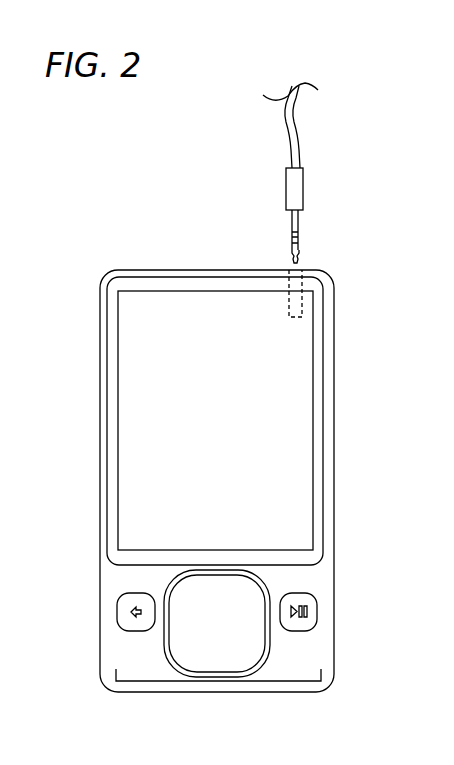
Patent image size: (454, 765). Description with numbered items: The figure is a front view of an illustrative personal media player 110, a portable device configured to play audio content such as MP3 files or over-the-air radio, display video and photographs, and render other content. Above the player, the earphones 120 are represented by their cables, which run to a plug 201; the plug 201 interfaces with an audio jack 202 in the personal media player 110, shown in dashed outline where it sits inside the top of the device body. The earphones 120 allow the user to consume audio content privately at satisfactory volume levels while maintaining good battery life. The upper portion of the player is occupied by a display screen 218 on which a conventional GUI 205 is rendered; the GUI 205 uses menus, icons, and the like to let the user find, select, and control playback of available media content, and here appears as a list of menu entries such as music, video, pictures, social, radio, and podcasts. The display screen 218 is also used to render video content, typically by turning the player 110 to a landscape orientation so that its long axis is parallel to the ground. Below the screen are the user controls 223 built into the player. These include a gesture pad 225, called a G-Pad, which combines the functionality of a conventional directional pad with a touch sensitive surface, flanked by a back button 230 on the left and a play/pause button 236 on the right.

The personal media player 110 is at (134, 268).
The earphones 120 is at (300, 110).
The plug 201 is at (286, 180).
The audio jack 202 is at (295, 303).
The GUI 205 is at (284, 336).
The display screen 218 is at (267, 463).
The user controls 223 is at (218, 683).
The gesture pad 225 is at (217, 623).
The back button 230 is at (127, 622).
The play/pause button 236 is at (300, 628).